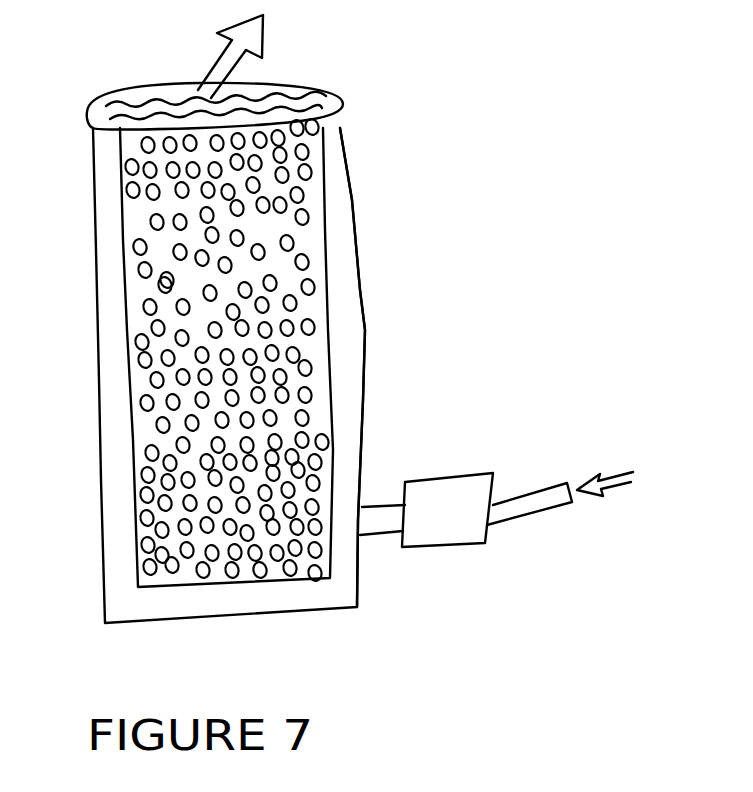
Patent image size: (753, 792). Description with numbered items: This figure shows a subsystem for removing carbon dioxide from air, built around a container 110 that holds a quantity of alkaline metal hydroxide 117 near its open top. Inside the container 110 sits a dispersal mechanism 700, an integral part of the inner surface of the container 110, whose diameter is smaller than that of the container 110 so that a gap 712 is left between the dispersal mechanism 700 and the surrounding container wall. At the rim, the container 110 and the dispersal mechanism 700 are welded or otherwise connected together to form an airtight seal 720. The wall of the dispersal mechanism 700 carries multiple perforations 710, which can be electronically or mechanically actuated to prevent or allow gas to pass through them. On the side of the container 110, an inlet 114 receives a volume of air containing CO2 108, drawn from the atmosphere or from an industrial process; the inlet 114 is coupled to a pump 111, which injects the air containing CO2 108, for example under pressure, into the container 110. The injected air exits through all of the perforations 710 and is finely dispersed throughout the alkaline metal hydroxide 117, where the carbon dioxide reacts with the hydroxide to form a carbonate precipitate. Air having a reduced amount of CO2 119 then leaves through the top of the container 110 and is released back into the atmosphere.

The dispersal mechanism 700 is at (125, 262).
The container 110 is at (345, 173).
The airtight seal 720 is at (93, 104).
The alkaline metal hydroxide 117 is at (290, 107).
The air having a reduced amount of CO2 119 is at (265, 30).
The gap 712 is at (337, 273).
The perforations 710 is at (86, 337).
The pump 111 is at (460, 517).
The inlet 114 is at (557, 482).
The air containing CO2 108 is at (613, 474).